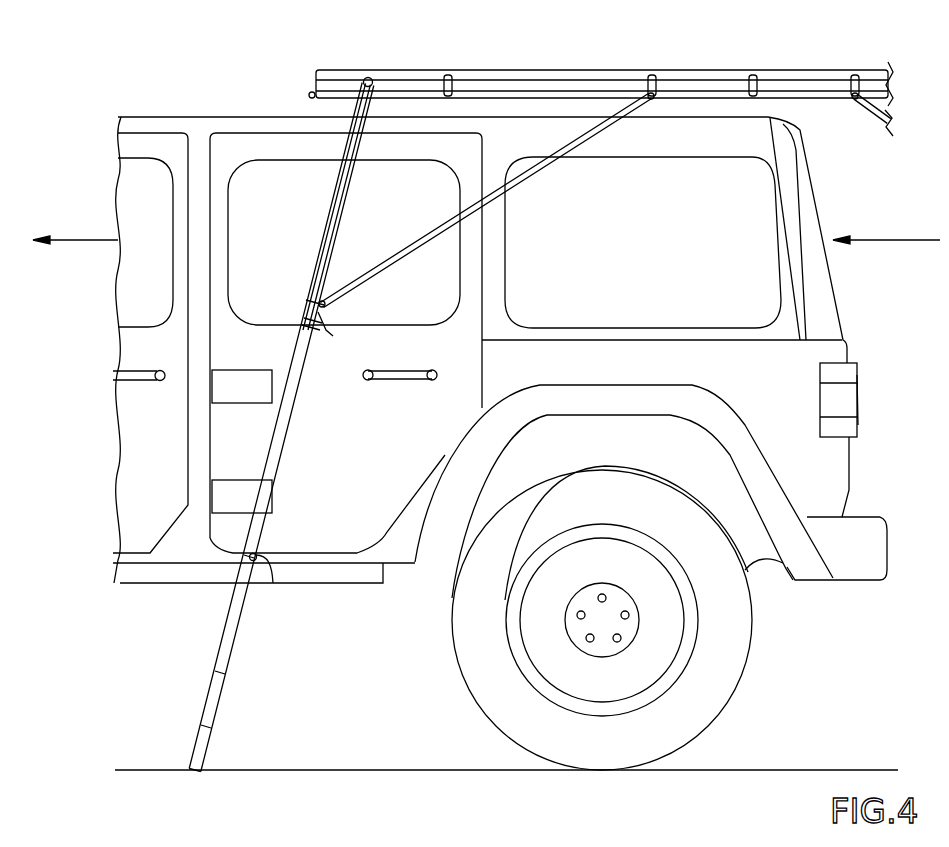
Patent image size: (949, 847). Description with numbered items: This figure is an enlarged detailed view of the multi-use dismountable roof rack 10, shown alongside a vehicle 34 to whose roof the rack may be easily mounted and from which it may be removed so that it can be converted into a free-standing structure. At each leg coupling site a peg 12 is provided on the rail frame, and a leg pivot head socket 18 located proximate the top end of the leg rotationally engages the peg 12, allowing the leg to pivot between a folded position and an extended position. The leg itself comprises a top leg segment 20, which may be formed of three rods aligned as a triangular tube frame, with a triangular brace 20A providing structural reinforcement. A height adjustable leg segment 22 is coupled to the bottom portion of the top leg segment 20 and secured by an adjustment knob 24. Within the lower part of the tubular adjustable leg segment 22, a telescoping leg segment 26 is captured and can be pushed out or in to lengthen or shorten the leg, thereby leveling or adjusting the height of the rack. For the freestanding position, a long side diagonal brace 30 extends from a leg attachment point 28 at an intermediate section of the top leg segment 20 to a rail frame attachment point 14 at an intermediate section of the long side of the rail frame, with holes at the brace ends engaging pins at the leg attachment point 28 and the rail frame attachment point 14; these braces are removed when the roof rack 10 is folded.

The multi-use dismountable roof rack 10 is at (515, 73).
The peg 12 is at (370, 78).
The rail frame attachment point 14 is at (312, 95).
The leg pivot head socket 18 is at (363, 82).
The top leg segment 20 is at (330, 212).
The triangular brace 20A is at (313, 320).
The height adjustable leg segment 22 is at (228, 642).
The adjustment knob 24 is at (273, 583).
The telescoping leg segment 26 is at (207, 727).
The leg attachment point 28 is at (313, 307).
The long side diagonal brace 30 is at (380, 272).
The vehicle 34 is at (147, 192).